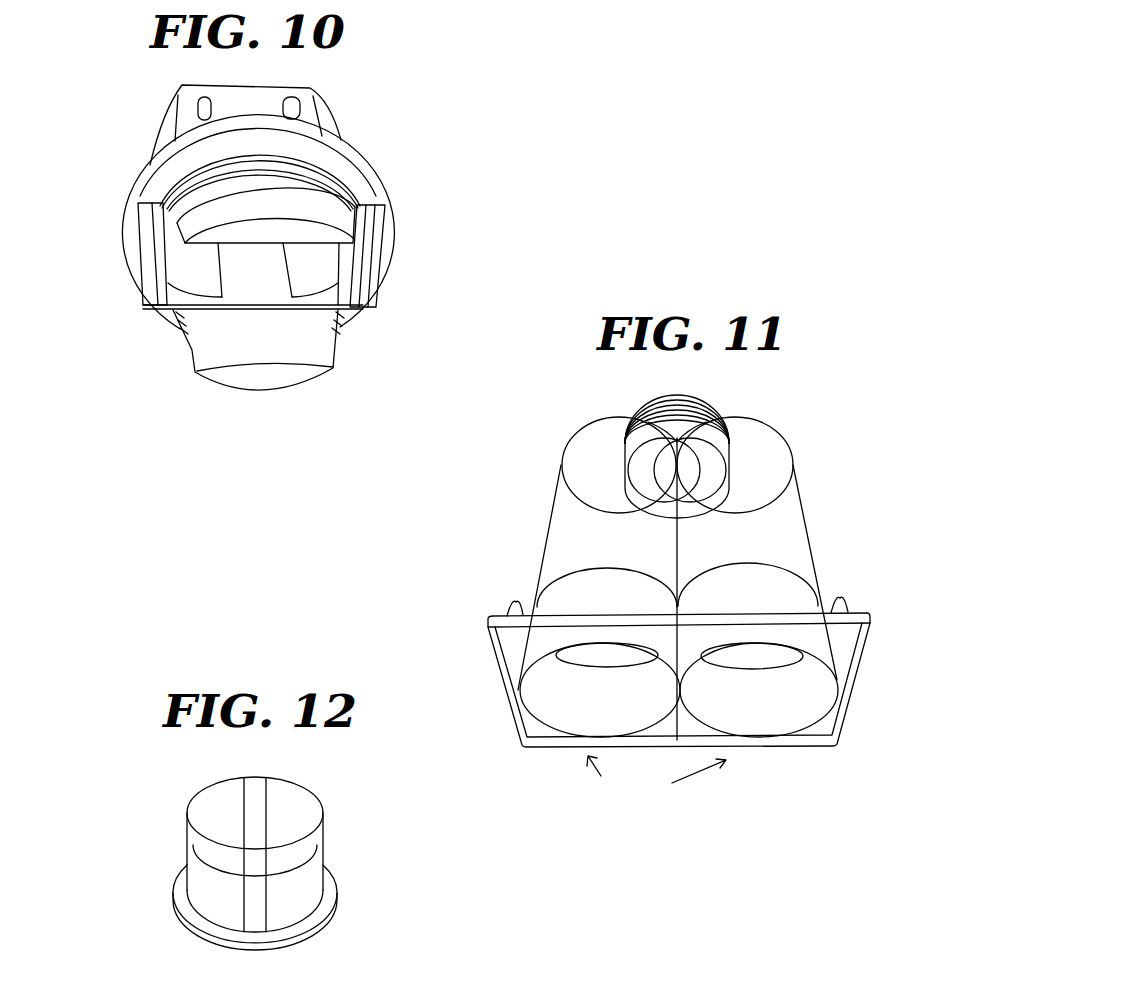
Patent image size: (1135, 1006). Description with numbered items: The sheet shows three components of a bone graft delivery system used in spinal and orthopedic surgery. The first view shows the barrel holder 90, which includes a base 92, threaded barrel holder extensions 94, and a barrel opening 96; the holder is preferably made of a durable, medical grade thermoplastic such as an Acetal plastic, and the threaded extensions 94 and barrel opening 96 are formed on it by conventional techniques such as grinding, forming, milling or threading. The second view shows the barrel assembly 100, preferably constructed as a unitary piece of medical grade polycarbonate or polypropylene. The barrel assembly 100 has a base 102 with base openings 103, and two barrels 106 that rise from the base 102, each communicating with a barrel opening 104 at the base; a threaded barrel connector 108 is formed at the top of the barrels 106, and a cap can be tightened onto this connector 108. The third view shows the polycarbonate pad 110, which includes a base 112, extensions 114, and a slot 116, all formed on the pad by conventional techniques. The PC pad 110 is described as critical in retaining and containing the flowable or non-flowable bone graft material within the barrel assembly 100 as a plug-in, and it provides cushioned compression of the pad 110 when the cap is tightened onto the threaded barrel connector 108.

In FIG. 10, the barrel holder 90 is at (311, 236).
In FIG. 10, the base 92 is at (385, 207).
In FIG. 10, the threaded barrel holder extensions 94 is at (198, 352).
In FIG. 10, the barrel opening 96 is at (373, 300).
In FIG. 11, the barrel assembly 100 is at (662, 608).
In FIG. 11, the base 102 is at (508, 652).
In FIG. 11, the base openings 103 is at (656, 784).
In FIG. 11, the barrel openings 104 is at (757, 695).
In FIG. 11, the barrels 106 is at (558, 543).
In FIG. 11, the threaded barrel connector 108 is at (661, 400).
In FIG. 12, the polycarbonate (PC) pad 110 is at (263, 861).
In FIG. 12, the base 112 is at (333, 887).
In FIG. 12, the extensions 114 is at (307, 815).
In FIG. 12, the slot 116 is at (255, 781).